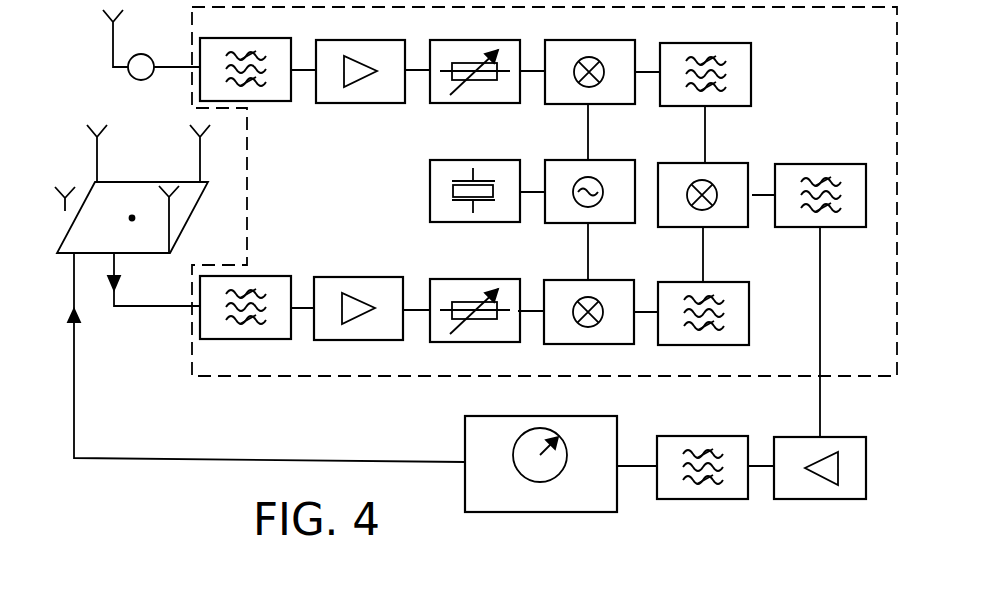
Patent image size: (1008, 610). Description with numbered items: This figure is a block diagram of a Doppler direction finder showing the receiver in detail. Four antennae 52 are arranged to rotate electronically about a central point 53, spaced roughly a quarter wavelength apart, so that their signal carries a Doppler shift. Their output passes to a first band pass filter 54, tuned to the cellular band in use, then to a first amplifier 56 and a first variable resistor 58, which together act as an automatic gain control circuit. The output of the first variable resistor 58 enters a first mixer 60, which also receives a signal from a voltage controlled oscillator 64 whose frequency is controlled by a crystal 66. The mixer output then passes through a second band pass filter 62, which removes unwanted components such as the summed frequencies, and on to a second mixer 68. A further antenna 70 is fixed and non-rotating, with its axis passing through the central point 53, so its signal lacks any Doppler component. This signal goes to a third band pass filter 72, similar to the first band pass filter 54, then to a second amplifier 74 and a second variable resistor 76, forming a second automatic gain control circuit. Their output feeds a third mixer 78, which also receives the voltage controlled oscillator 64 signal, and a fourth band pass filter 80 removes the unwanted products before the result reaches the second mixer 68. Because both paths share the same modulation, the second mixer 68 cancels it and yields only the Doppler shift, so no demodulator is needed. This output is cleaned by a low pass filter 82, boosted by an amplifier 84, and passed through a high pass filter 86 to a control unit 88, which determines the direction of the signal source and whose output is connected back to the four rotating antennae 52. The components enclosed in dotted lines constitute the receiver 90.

The antennae 52 is at (200, 152).
The central point 53 is at (132, 216).
The first band pass filter 54 is at (268, 276).
The first amplifier 56 is at (380, 277).
The first variable resistor 58 is at (490, 279).
The first mixer 60 is at (604, 280).
The second band pass filter 62 is at (722, 282).
The voltage controlled oscillator 64 is at (563, 160).
The crystal 66 is at (430, 198).
The second mixer 68 is at (679, 163).
The further antenna 70 is at (113, 35).
The third band pass filter 72 is at (270, 103).
The second amplifier 74 is at (387, 104).
The second variable resistor 76 is at (501, 104).
The third mixer 78 is at (617, 106).
The fourth band pass filter 80 is at (725, 108).
The low pass filter 82 is at (835, 164).
The amplifier 84 is at (832, 501).
The high pass filter 86 is at (716, 500).
The control unit 88 is at (581, 514).
The receiver 90 is at (318, 372).